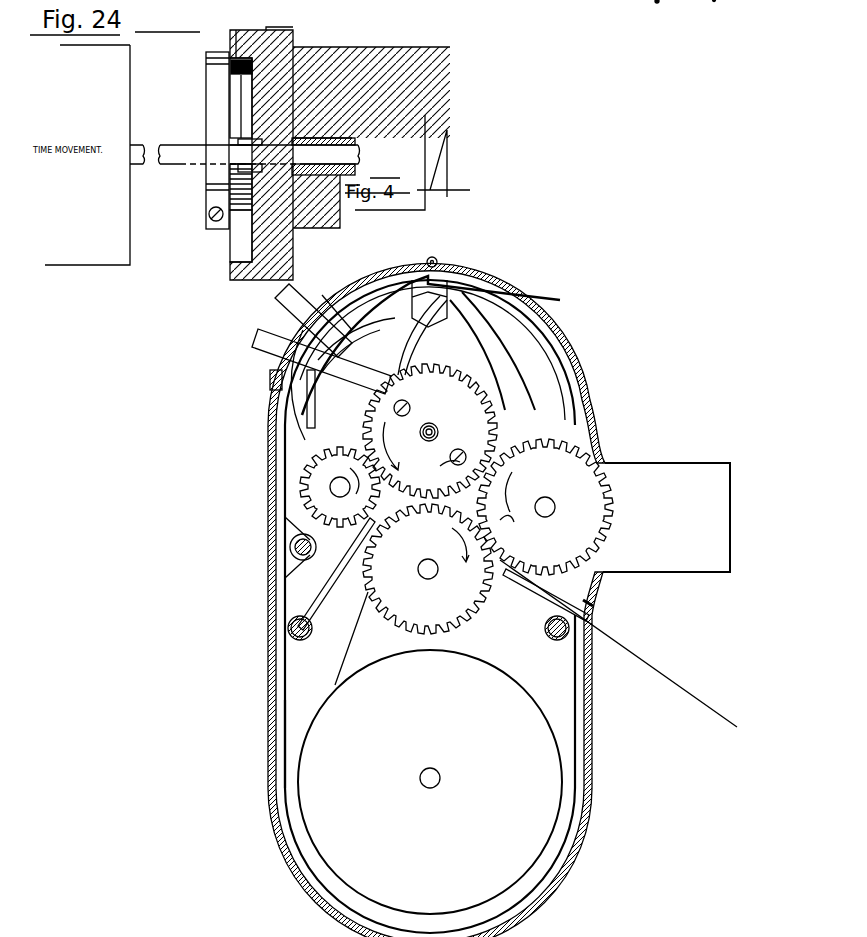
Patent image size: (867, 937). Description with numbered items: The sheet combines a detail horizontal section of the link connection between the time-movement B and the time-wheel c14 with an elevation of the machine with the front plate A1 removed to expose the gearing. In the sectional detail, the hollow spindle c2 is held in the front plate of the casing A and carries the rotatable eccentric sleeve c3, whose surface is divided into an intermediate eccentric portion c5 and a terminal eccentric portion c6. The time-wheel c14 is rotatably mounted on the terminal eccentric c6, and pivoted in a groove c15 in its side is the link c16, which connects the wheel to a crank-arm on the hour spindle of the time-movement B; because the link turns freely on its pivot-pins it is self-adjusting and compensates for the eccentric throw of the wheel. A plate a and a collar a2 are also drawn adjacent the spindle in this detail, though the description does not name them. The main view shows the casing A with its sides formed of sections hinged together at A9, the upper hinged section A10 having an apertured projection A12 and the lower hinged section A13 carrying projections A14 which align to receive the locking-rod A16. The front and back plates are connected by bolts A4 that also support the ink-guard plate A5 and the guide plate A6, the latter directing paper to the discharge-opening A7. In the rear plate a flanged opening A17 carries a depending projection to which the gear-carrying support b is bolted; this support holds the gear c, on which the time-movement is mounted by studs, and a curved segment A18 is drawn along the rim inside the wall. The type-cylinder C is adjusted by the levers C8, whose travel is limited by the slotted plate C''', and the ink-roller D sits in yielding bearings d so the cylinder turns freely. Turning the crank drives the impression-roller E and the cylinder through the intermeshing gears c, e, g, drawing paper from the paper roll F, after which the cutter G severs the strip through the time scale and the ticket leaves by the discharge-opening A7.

In FIG. 24, the time-movement B is at (87, 155).
In FIG. 24, the plate a is at (207, 114).
In FIG. 24, the collar a2 is at (230, 64).
In FIG. 24, the hollow spindle c2 is at (358, 143).
In FIG. 4, the hollow spindle c2 is at (439, 432).
In FIG. 24, the eccentric sleeve c3 is at (228, 198).
In FIG. 24, the intermediate eccentric portion c5 is at (400, 47).
In FIG. 24, the terminal eccentric portion c6 is at (206, 178).
In FIG. 24, the time-wheel c14 is at (269, 28).
In FIG. 24, the groove c15 is at (234, 44).
In FIG. 24, the link c16 is at (262, 84).
In FIG. 4, the casing A is at (267, 606).
In FIG. 4, the front plate A1 is at (538, 680).
In FIG. 4, the bolts A4 is at (298, 628).
In FIG. 4, the ink-guard plate A5 is at (332, 584).
In FIG. 4, the guide plate A6 is at (532, 598).
In FIG. 4, the discharge-opening A7 is at (592, 608).
In FIG. 4, the hinge A9 is at (431, 257).
In FIG. 4, the upper hinged section A10 is at (273, 443).
In FIG. 4, the apertured projection A12 is at (292, 547).
In FIG. 4, the lower hinged section A13 is at (270, 817).
In FIG. 4, the projections A14 is at (283, 528).
In FIG. 4, the locking-rod A16 is at (300, 548).
In FIG. 4, the flanged opening A17 is at (517, 375).
In FIG. 4, the ring segment A18 is at (455, 290).
In FIG. 4, the gear-carrying support b is at (427, 340).
In FIG. 4, the type-cylinder C is at (430, 431).
In FIG. 4, the gear c is at (438, 471).
In FIG. 4, the slotted plate C''' is at (268, 385).
In FIG. 4, the levers C8 is at (345, 320).
In FIG. 4, the ink-roller D is at (305, 485).
In FIG. 4, the yielding bearings d is at (340, 496).
In FIG. 4, the impression-roller E is at (428, 559).
In FIG. 4, the gear e is at (428, 587).
In FIG. 4, the cutter G is at (545, 507).
In FIG. 4, the gear g is at (507, 520).
In FIG. 4, the paper roll F is at (517, 737).